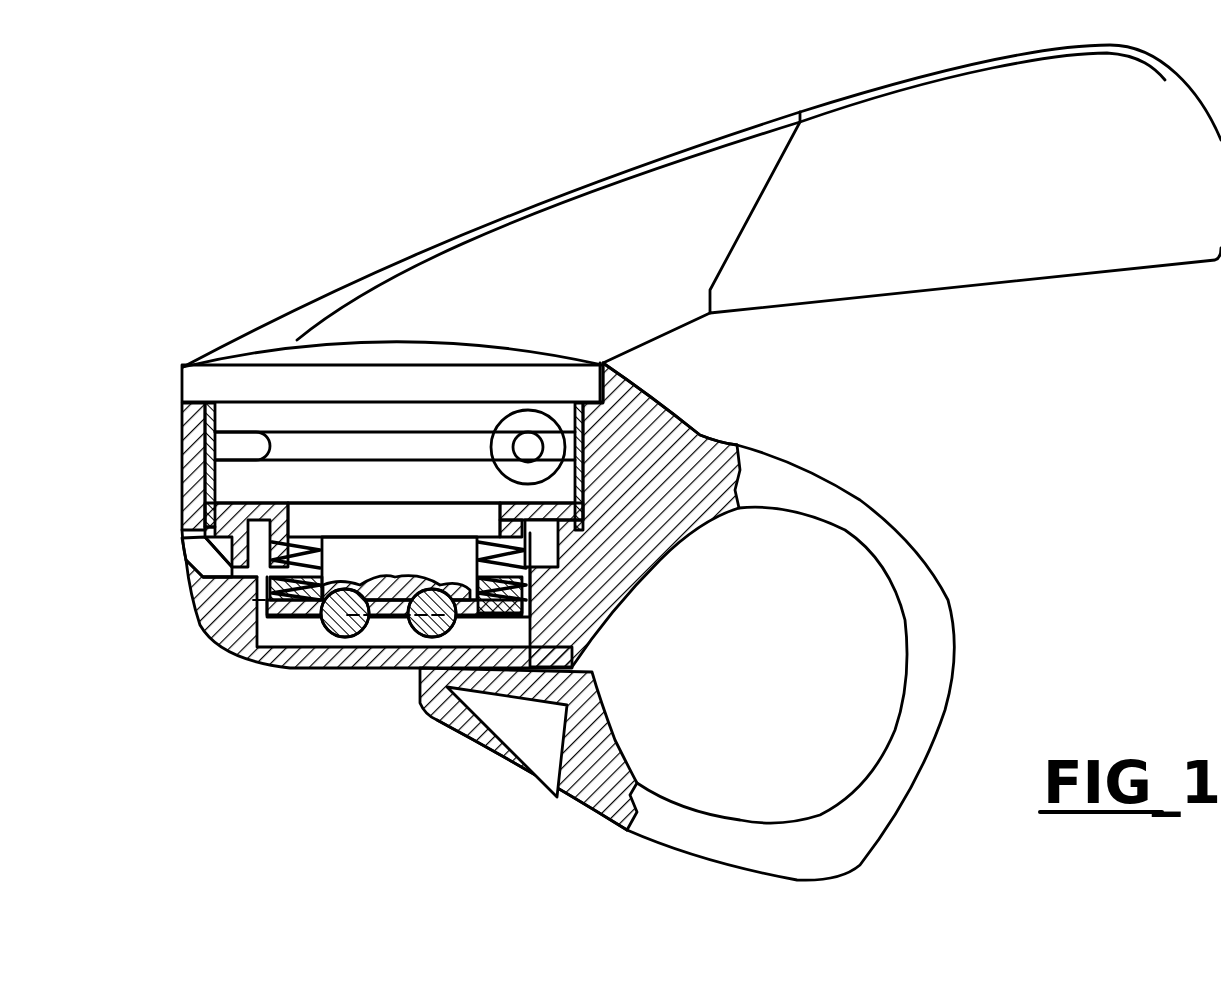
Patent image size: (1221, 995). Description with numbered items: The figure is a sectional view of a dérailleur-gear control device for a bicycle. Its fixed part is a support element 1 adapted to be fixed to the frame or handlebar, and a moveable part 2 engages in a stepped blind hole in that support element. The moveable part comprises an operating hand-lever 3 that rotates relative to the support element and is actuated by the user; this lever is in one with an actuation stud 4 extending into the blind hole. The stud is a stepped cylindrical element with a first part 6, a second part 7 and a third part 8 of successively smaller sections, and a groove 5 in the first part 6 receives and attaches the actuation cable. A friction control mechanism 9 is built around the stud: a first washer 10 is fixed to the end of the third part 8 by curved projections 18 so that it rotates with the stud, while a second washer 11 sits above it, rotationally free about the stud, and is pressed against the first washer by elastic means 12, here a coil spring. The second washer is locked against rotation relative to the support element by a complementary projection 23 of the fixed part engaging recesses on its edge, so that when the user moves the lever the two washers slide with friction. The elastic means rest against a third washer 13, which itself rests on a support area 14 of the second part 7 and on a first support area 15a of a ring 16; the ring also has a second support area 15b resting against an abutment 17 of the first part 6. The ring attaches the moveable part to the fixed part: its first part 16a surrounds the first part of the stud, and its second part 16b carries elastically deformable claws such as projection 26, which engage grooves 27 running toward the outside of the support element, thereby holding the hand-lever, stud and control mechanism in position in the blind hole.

The support element 1 is at (912, 536).
The moveable part 2 is at (382, 217).
The operating hand-lever 3 is at (747, 125).
The actuation stud 4 is at (315, 420).
The groove 5 is at (390, 447).
The first part 6 is at (395, 483).
The second part 7 is at (435, 520).
The third part 8 is at (399, 568).
The control mechanism 9 is at (222, 592).
The first washer 10 is at (292, 615).
The second washer 11 is at (257, 600).
The elastic means 12 is at (213, 572).
The third washer 13 is at (540, 540).
The support area 14 is at (490, 520).
The first support area 15a is at (520, 535).
The second support area 15b is at (583, 470).
The ring 16 is at (592, 507).
The first part of ring 16a is at (590, 485).
The second part of ring 16b is at (215, 530).
The abutment 17 is at (533, 495).
The curved projections 18 is at (430, 630).
The projection 23 is at (545, 570).
The projection 26 is at (200, 542).
The grooves 27 is at (207, 556).